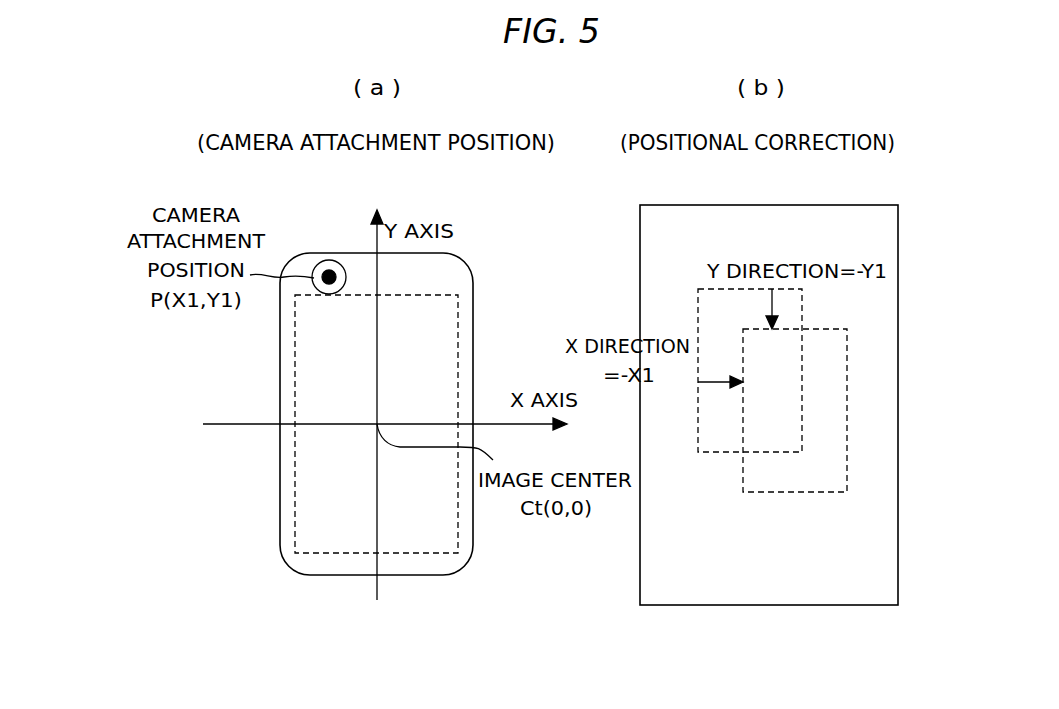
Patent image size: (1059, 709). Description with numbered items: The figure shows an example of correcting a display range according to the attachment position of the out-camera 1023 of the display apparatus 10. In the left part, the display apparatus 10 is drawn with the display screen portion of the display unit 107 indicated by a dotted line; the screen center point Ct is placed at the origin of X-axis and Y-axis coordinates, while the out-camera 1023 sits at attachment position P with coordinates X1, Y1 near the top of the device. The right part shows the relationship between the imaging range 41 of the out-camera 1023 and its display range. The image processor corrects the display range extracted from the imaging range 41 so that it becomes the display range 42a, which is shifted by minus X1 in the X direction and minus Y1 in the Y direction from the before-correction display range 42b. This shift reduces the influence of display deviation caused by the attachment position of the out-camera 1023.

The display apparatus 10 is at (417, 578).
The display unit 107 is at (458, 297).
The out-camera 1023 is at (331, 260).
The imaging range 41 is at (773, 605).
The display range 42a is at (830, 492).
The before-correction display range 42b is at (718, 452).